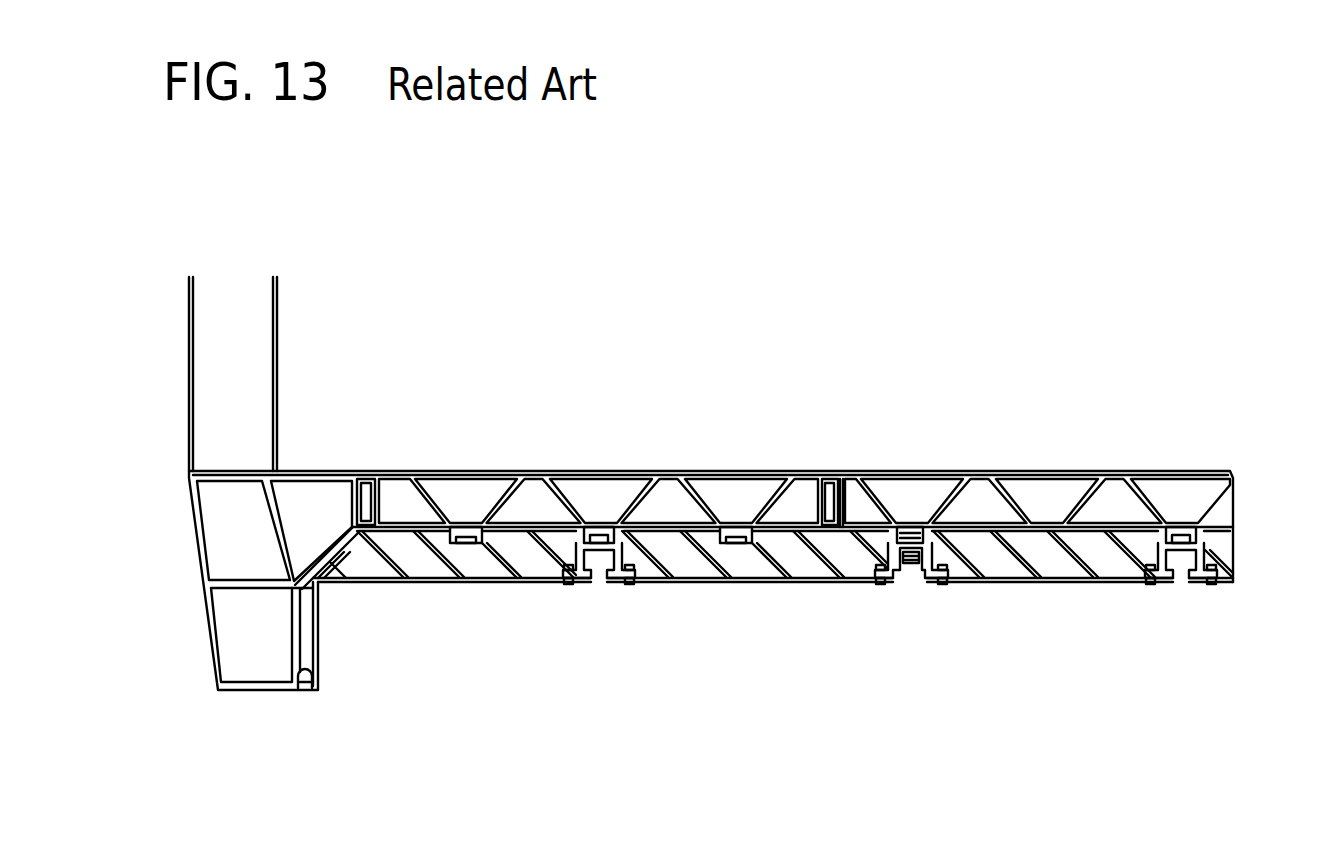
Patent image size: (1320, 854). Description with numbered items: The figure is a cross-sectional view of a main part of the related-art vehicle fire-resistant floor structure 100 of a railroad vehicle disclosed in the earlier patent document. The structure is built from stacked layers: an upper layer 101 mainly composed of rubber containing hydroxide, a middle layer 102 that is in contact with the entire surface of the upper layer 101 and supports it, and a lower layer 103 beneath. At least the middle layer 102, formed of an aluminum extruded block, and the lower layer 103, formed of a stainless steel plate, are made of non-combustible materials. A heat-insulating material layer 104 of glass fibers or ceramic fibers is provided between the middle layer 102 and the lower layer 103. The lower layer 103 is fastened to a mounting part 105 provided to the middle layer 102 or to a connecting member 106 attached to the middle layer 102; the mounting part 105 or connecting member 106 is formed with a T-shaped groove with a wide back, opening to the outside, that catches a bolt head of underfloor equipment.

The vehicle fire-resistant floor structure 100 is at (1078, 418).
The upper layer 101 is at (590, 476).
The middle layer 102 is at (493, 505).
The lower layer 103 is at (750, 584).
The heat-insulating material layer 104 is at (793, 557).
The mounting part 105 is at (607, 580).
The connecting member 106 is at (918, 584).